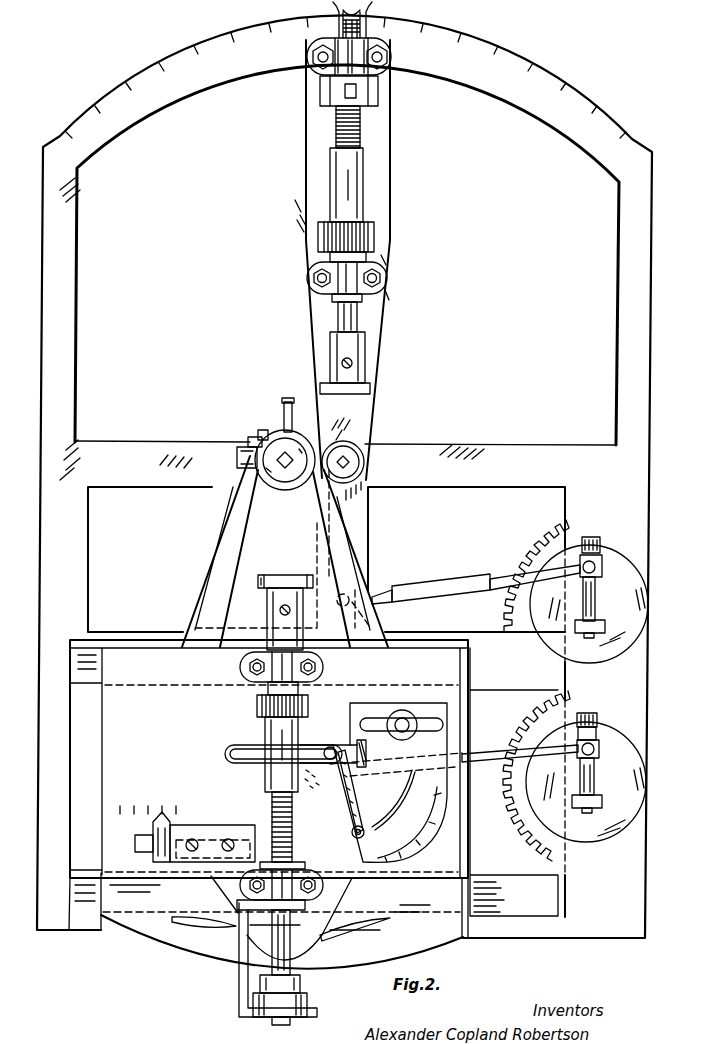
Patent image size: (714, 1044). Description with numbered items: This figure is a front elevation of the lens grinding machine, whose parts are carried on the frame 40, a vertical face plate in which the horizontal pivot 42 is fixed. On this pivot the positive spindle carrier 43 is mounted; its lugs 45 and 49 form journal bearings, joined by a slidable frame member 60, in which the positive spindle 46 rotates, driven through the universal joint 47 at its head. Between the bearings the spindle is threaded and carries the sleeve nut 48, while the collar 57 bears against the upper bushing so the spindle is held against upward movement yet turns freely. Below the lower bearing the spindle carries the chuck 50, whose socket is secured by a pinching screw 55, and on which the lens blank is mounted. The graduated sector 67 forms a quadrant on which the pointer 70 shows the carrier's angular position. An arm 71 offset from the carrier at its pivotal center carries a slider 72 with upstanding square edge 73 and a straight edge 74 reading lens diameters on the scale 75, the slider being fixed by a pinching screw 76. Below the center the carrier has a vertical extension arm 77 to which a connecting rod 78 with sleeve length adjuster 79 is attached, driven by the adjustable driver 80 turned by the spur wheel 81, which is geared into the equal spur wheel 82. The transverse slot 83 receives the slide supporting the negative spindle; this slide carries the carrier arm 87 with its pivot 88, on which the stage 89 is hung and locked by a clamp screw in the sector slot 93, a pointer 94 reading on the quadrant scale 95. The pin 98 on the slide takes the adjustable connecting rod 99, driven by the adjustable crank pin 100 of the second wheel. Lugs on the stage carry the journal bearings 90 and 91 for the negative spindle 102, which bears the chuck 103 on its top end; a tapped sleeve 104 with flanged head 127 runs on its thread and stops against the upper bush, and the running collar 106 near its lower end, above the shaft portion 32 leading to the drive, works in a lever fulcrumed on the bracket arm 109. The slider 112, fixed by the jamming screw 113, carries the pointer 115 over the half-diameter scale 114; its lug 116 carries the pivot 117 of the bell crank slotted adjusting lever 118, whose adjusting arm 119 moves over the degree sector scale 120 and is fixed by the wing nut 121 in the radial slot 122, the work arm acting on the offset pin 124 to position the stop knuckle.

The machine housing or frame 40 is at (344, 476).
The sector 67 is at (129, 117).
The positive spindle carrier 43 is at (388, 210).
The frame member 60 is at (380, 153).
The universal joint 47 is at (362, 16).
The pointer 70 is at (388, 28).
The collar 57 is at (378, 93).
The lug 45 is at (325, 78).
The sleeve nut 48 is at (340, 191).
The lug 49 is at (335, 287).
The positive spindle 46 is at (357, 318).
The face plate or chuck 50 is at (352, 373).
The pinching screw 55 is at (333, 365).
The horizontal pivot 42 is at (352, 452).
The arm 71 is at (325, 448).
The pivot 88 is at (285, 491).
The straight edge 74 is at (240, 483).
The square edge 73 is at (284, 404).
The pinching screw 76 is at (261, 429).
The slider 72 is at (250, 440).
The scale 75 is at (238, 460).
The carrier arm 87 is at (220, 553).
The stage 89 is at (283, 598).
The face plate or chuck 103 is at (291, 577).
The vertical extension arm 77 is at (362, 515).
The sleeve length adjuster 79 is at (446, 583).
The connecting rod 78 is at (506, 576).
The spur wheel 81 is at (541, 529).
The adjustable driver 80 is at (602, 569).
The spur wheel 82 is at (529, 717).
The transverse slot 83 is at (514, 782).
The adjustable connecting rod 99 is at (491, 760).
The adjustable crank pin 100 is at (600, 752).
The slider 112 is at (269, 759).
The degree sector scale 120 is at (447, 831).
The jamming screw 113 is at (405, 711).
The offset pin 124 is at (272, 748).
The pivot 117 is at (318, 737).
The bell crank slotted adjusting lever 118 is at (328, 731).
The lug 116 is at (345, 753).
The adjusting arm 119 is at (343, 812).
The pin 98 is at (314, 787).
The radial slot 122 is at (400, 797).
The wing nut 121 is at (365, 836).
The journal bearing 90 is at (262, 686).
The flanged head 127 is at (256, 706).
The tapped sleeve 104 is at (280, 773).
The negative spindle 102 is at (271, 812).
The scale 114 is at (157, 803).
The pointer 115 is at (172, 824).
The journal bearing 91 is at (285, 880).
The sector slot 93 is at (367, 922).
The quadrant scale 95 is at (362, 947).
The bracket arm 109 is at (238, 983).
The shaft 32 is at (292, 943).
The pointer 94 is at (302, 978).
The running collar 106 is at (310, 1004).